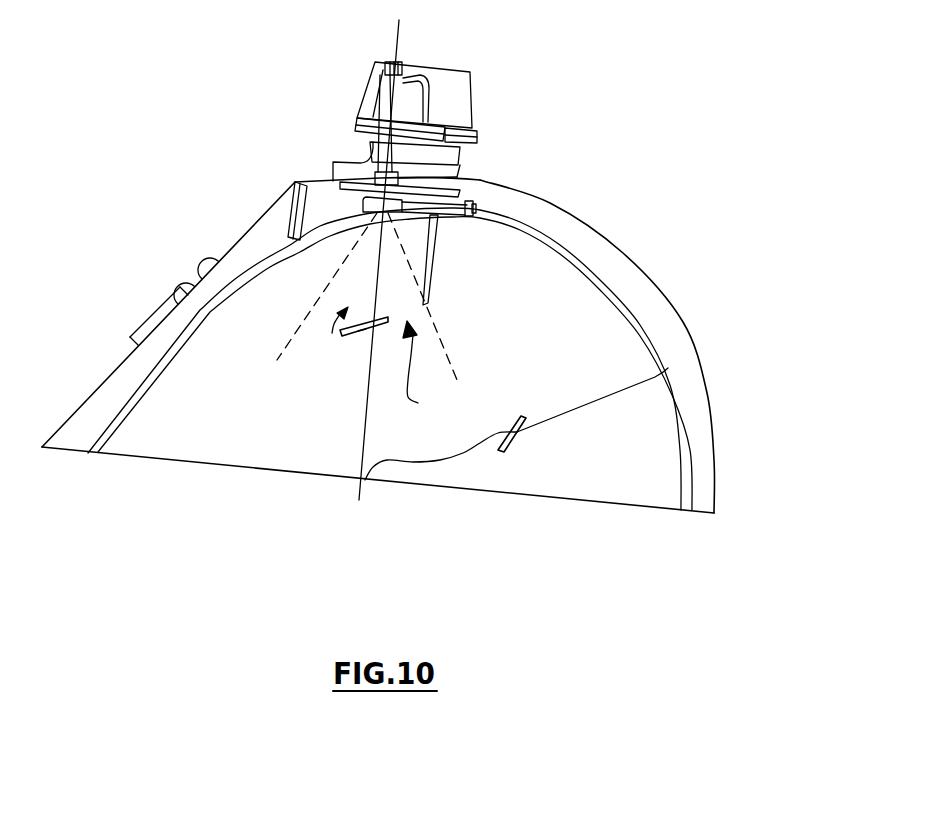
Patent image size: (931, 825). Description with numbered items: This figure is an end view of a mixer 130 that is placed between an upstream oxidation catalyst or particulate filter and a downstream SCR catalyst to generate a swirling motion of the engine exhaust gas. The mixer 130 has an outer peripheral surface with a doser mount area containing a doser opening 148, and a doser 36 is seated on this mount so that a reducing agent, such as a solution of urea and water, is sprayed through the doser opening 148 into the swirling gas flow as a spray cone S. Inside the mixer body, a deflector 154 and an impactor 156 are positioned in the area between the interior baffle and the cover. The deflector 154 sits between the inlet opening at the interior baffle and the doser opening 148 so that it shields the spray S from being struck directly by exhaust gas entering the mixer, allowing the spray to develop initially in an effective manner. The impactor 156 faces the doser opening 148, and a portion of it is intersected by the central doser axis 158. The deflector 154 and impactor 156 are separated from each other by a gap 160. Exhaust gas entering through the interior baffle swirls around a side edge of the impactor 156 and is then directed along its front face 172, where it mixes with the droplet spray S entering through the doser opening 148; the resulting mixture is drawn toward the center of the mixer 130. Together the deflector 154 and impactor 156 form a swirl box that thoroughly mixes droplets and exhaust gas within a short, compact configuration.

The doser 36 is at (462, 104).
The mixer 130 is at (745, 368).
The doser opening 148 is at (289, 235).
The deflector 154 is at (433, 252).
The impactor 156 is at (358, 331).
The central doser axis 158 is at (357, 433).
The gap 160 is at (431, 373).
The front face 172 is at (372, 316).
The spray cone S is at (303, 317).